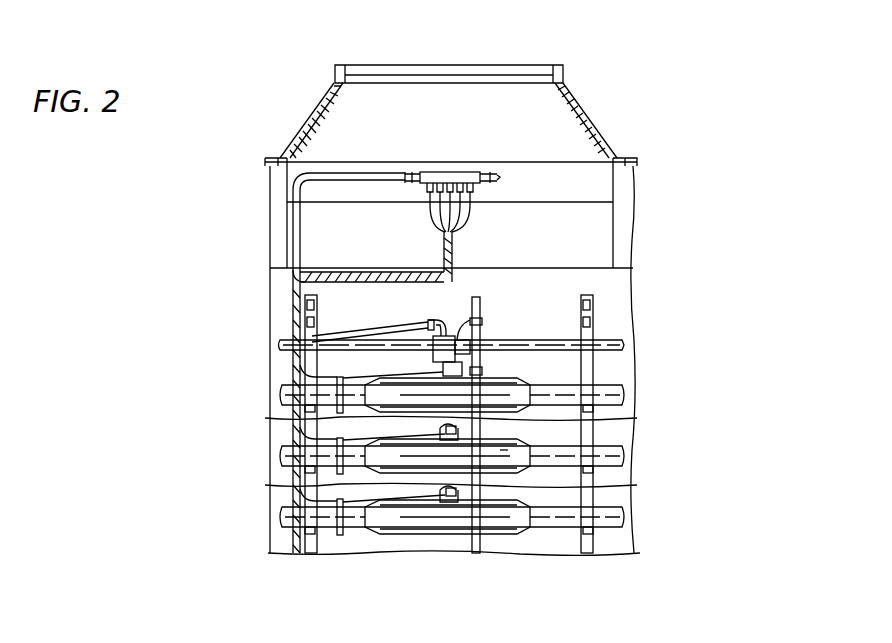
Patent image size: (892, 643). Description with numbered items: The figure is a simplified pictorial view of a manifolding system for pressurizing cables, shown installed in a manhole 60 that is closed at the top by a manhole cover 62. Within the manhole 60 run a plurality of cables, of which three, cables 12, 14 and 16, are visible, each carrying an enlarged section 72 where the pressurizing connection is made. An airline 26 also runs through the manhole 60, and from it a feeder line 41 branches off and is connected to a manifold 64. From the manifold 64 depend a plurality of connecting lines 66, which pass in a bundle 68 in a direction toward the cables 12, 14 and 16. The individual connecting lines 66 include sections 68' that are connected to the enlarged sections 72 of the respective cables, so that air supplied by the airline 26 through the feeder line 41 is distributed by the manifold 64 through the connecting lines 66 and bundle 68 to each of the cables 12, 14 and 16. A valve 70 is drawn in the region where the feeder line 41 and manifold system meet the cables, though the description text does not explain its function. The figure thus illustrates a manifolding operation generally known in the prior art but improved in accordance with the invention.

The cable 12 is at (283, 392).
The cable 14 is at (290, 457).
The cable 16 is at (290, 518).
The airline 26 is at (545, 341).
The feeder line 41 is at (422, 325).
The manhole 60 is at (303, 127).
The manhole cover 62 is at (427, 64).
The manifold 64 is at (481, 188).
The connecting lines 66 is at (462, 228).
The bundle 68 is at (372, 363).
The sections of connecting lines 68' is at (372, 401).
The valve 70 is at (481, 362).
The enlarged sections 72 is at (506, 465).